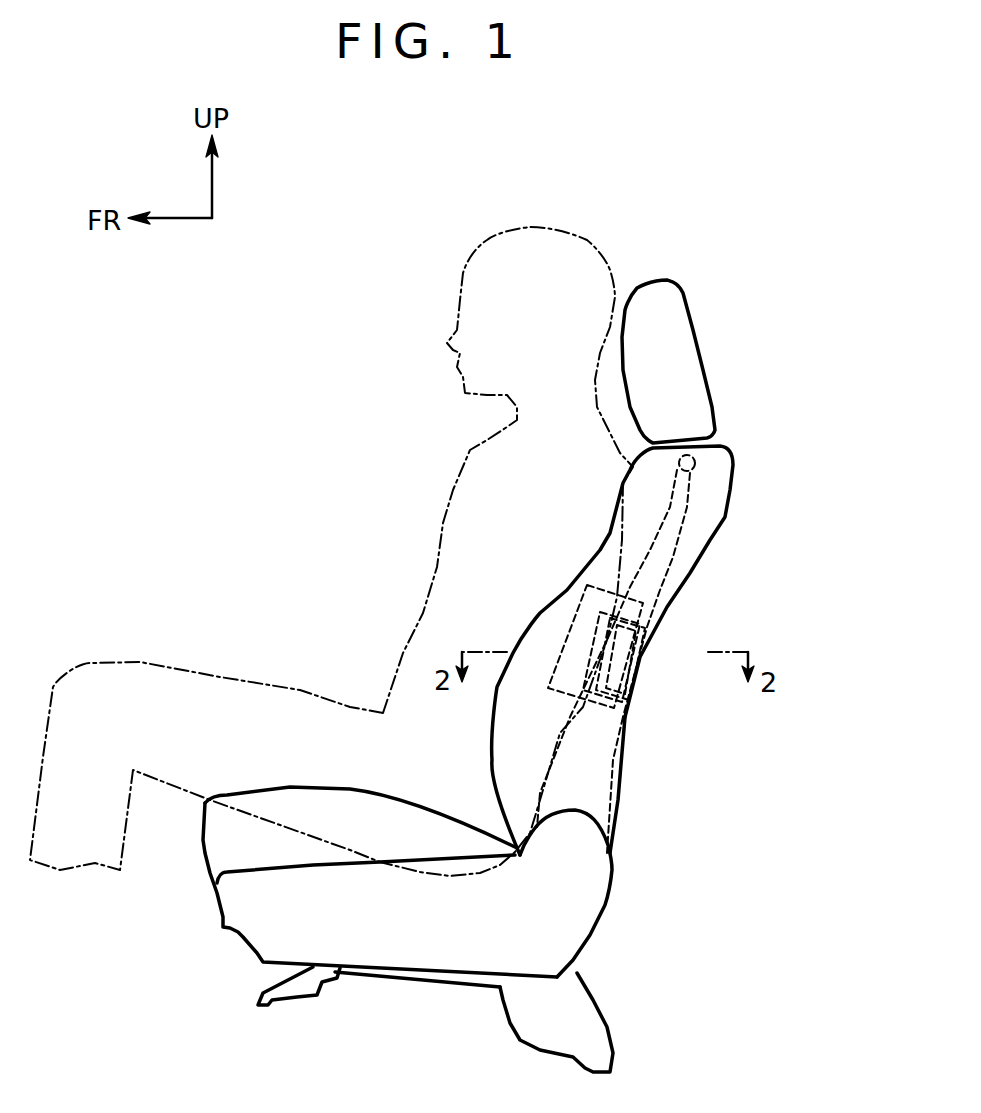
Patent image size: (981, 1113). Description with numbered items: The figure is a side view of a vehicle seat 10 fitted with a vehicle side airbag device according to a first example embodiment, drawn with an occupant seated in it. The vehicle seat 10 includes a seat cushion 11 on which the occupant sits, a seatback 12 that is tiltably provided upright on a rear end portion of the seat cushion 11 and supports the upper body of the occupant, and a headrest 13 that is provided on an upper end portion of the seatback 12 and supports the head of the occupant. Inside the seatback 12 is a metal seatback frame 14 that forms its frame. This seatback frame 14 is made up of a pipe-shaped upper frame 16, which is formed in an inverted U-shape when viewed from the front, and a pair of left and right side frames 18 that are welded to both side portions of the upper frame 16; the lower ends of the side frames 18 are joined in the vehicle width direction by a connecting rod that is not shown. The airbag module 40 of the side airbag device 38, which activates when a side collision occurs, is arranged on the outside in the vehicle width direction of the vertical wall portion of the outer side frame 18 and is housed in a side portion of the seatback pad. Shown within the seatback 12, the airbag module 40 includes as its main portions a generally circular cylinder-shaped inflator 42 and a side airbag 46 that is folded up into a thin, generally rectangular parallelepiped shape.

The vehicle seat 10 is at (465, 676).
The seat cushion 11 is at (202, 851).
The seatback 12 is at (718, 531).
The headrest 13 is at (703, 352).
The seatback frame 14 is at (612, 800).
The upper frame 16 is at (692, 487).
The side frame 18 is at (627, 764).
The side airbag device 38 is at (562, 620).
The airbag module 40 is at (580, 599).
The inflator 42 is at (630, 670).
The side airbag 46 is at (600, 590).